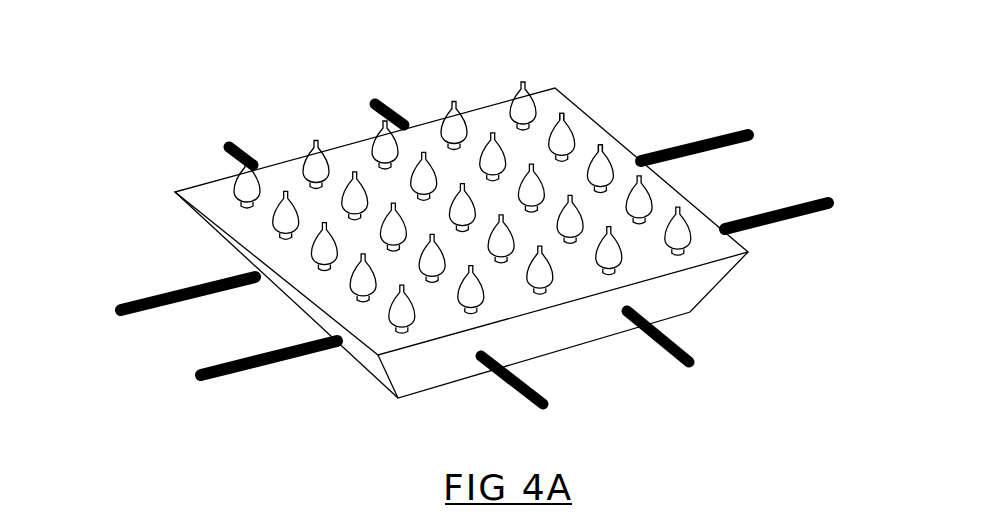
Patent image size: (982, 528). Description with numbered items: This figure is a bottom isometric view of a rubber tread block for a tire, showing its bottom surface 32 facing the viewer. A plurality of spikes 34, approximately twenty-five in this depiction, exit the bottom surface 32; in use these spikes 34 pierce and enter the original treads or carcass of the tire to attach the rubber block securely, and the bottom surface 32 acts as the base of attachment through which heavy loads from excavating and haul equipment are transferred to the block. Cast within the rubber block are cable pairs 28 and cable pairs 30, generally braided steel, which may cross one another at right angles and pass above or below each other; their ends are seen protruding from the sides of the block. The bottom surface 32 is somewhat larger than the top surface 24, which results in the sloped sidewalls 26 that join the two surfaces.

The top surface 24 is at (431, 392).
The sloped sidewalls 26 is at (683, 293).
The cable pairs 28 is at (378, 103).
The cable pairs 30 is at (747, 134).
The bottom surface 32 is at (500, 120).
The spikes 34 is at (560, 112).